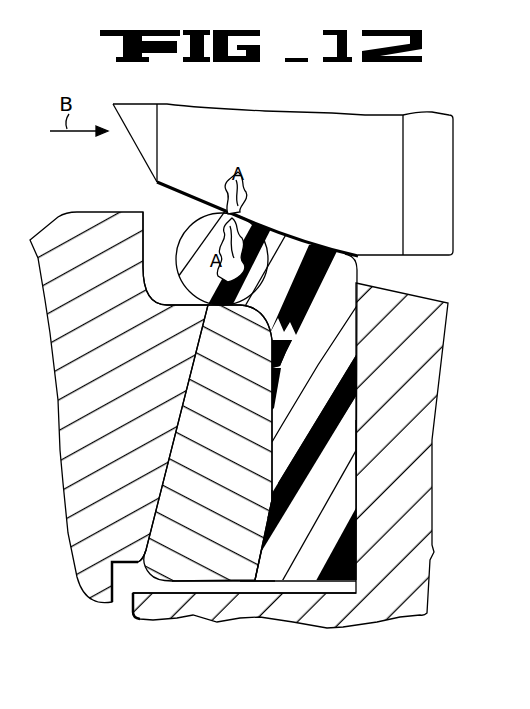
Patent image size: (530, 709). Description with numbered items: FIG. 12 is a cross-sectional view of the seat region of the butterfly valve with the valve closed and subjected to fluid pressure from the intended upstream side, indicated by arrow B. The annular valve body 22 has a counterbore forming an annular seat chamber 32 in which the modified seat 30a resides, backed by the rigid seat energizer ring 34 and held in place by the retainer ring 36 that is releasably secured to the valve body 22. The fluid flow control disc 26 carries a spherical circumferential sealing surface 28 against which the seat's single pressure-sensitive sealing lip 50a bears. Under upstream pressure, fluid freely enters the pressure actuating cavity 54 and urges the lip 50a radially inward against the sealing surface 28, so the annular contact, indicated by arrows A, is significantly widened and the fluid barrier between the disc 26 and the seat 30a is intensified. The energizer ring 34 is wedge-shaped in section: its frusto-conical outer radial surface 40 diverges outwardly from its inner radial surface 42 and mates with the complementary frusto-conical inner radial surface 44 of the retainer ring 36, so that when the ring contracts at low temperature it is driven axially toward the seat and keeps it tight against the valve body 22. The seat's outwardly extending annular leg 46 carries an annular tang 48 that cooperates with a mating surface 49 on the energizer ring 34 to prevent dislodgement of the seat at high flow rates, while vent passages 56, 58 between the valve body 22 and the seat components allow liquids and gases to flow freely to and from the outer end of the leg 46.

The valve body 22 is at (400, 620).
The fluid flow control disc 26 is at (150, 150).
The circumferential sealing surface 28 is at (308, 192).
The seat 30a is at (345, 290).
The seat chamber 32 is at (350, 433).
The seat energizer ring 34 is at (260, 343).
The retainer ring 36 is at (68, 465).
The outer radial surface 40 is at (150, 517).
The inner radial surface 42 is at (272, 500).
The inner radial surface 44 is at (150, 536).
The annular leg 46 is at (317, 420).
The annular tang 48 is at (260, 573).
The mating surface 49 is at (266, 546).
The sealing lip 50a is at (200, 220).
The pressure actuating cavity 54 is at (155, 278).
The vent passage 56 is at (177, 588).
The vent passage 58 is at (122, 608).